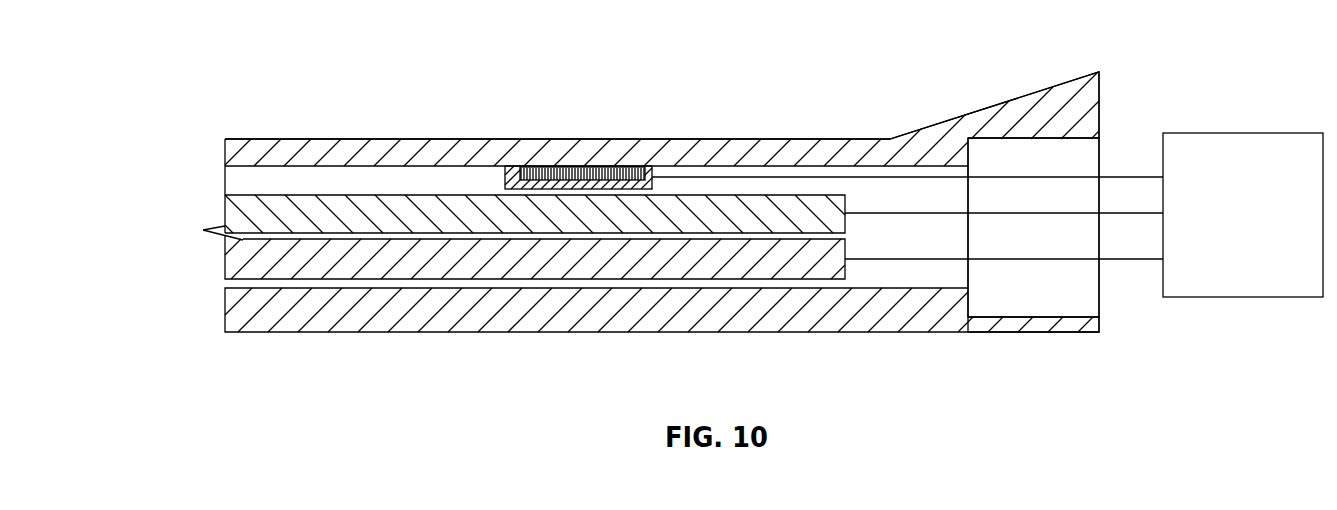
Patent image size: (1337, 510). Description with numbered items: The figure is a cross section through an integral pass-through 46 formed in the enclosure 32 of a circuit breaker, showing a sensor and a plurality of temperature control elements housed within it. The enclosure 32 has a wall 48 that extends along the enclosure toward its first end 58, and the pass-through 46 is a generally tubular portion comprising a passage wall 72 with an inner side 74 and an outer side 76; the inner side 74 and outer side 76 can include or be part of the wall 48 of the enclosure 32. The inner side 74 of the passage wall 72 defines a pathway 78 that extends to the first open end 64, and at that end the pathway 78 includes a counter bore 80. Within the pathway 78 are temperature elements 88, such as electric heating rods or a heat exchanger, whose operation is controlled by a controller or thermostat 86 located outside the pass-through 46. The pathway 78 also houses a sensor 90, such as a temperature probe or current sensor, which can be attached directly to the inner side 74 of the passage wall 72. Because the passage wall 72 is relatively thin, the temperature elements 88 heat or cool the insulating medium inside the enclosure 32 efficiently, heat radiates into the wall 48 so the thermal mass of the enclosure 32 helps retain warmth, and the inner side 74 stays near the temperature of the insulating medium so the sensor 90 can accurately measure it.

The enclosure 32 is at (1090, 120).
The pass-through 46 is at (797, 155).
The wall 48 is at (1025, 108).
The first end 58 is at (1102, 78).
The first open end 64 is at (1100, 323).
The passage wall 72 is at (384, 153).
The inner side 74 is at (332, 162).
The outer side 76 is at (518, 140).
The pathway 78 is at (413, 175).
The counter bore 80 is at (1072, 158).
The controller or thermostat 86 is at (1262, 228).
The temperature element 88 is at (660, 205).
The sensor 90 is at (578, 167).